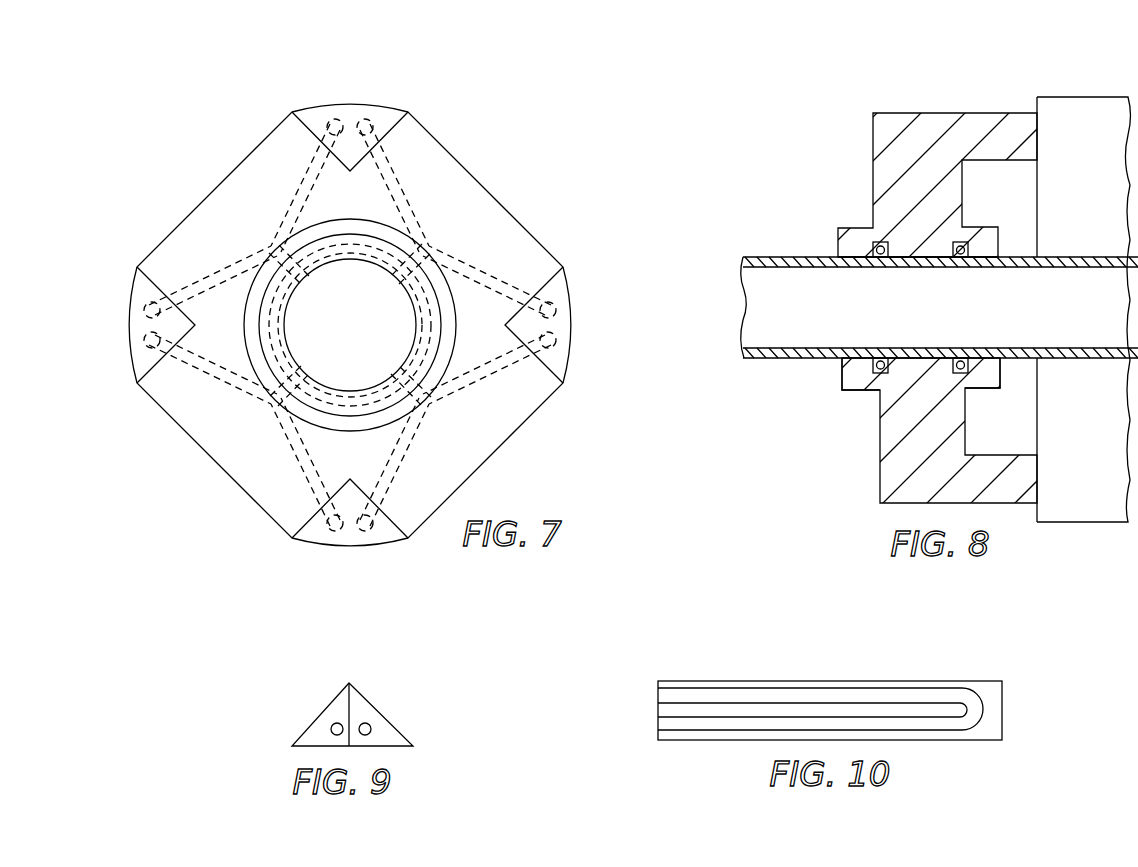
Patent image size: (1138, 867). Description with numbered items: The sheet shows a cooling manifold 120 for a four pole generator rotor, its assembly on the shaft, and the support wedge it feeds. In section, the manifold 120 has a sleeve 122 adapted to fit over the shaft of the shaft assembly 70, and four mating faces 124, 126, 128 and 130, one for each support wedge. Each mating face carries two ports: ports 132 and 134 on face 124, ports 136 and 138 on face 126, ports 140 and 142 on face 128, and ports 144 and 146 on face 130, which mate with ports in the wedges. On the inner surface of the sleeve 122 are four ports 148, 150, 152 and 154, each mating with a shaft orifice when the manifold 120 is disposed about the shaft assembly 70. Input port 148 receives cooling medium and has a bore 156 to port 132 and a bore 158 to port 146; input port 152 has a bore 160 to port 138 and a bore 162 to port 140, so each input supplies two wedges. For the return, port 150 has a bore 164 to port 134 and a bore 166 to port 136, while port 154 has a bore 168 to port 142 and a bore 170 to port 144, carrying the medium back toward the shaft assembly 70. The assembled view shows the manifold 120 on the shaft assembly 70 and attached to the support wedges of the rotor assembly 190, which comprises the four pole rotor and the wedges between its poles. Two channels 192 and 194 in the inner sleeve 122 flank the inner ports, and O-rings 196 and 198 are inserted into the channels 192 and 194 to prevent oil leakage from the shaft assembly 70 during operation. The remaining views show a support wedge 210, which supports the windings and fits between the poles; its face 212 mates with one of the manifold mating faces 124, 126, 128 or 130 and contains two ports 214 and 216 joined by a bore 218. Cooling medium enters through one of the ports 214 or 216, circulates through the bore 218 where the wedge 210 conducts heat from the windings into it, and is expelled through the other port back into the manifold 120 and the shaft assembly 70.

In FIG. 8, the shaft assembly 70 is at (758, 254).
In FIG. 7, the manifold 120 is at (170, 150).
In FIG. 8, the manifold 120 is at (868, 134).
In FIG. 7, the sleeve 122 is at (349, 246).
In FIG. 8, the sleeve 122 is at (802, 256).
In FIG. 7, the mating face 124 is at (305, 110).
In FIG. 7, the mating face 126 is at (568, 270).
In FIG. 7, the mating face 128 is at (386, 541).
In FIG. 7, the mating face 130 is at (135, 372).
In FIG. 7, the port 132 is at (334, 118).
In FIG. 7, the port 134 is at (368, 118).
In FIG. 7, the port 136 is at (557, 313).
In FIG. 7, the port 138 is at (557, 336).
In FIG. 7, the port 140 is at (364, 532).
In FIG. 7, the port 142 is at (328, 530).
In FIG. 7, the port 144 is at (143, 340).
In FIG. 7, the port 146 is at (143, 311).
In FIG. 7, the manifold input port 148 is at (301, 258).
In FIG. 7, the manifold port 150 is at (394, 258).
In FIG. 7, the manifold input port 152 is at (396, 384).
In FIG. 7, the manifold port 154 is at (306, 384).
In FIG. 7, the bore 156 is at (268, 145).
In FIG. 7, the bore 158 is at (167, 233).
In FIG. 7, the bore 160 is at (558, 383).
In FIG. 7, the bore 162 is at (470, 465).
In FIG. 7, the bore 164 is at (415, 130).
In FIG. 7, the bore 166 is at (525, 240).
In FIG. 7, the bore 168 is at (247, 502).
In FIG. 7, the bore 170 is at (195, 428).
In FIG. 8, the rotor assembly 190 is at (1064, 90).
In FIG. 8, the channel 192 is at (880, 374).
In FIG. 8, the channel 194 is at (970, 363).
In FIG. 8, the O-ring 196 is at (882, 273).
In FIG. 8, the O-ring 198 is at (963, 273).
In FIG. 9, the support wedge 210 is at (316, 690).
In FIG. 10, the support wedge 210 is at (754, 658).
In FIG. 9, the face 212 is at (358, 698).
In FIG. 9, the port 214 is at (370, 725).
In FIG. 9, the port 216 is at (330, 728).
In FIG. 10, the port 216 is at (652, 699).
In FIG. 10, the bore 218 is at (652, 733).